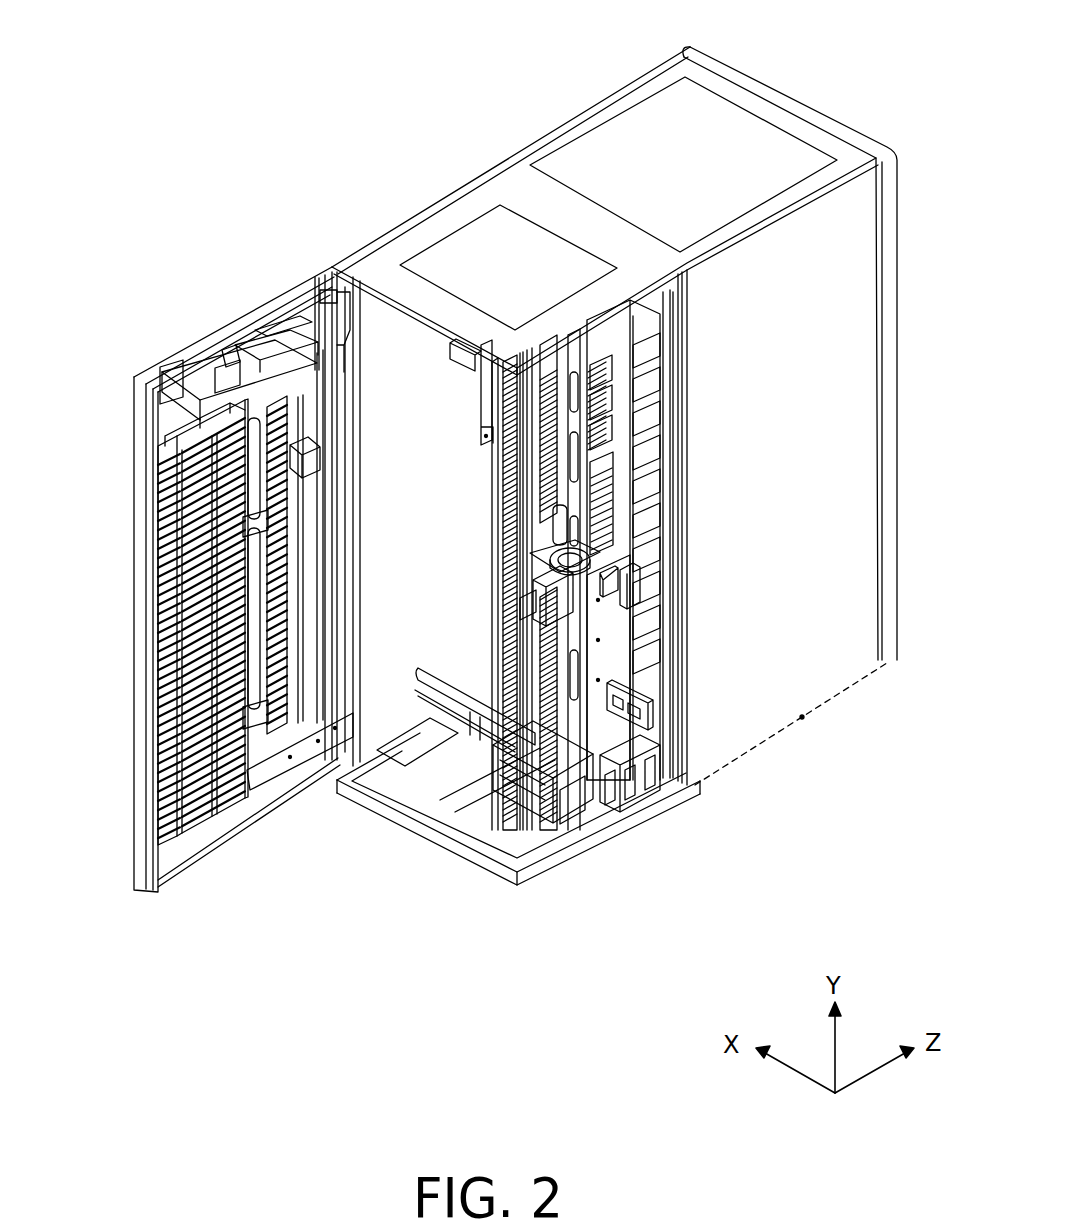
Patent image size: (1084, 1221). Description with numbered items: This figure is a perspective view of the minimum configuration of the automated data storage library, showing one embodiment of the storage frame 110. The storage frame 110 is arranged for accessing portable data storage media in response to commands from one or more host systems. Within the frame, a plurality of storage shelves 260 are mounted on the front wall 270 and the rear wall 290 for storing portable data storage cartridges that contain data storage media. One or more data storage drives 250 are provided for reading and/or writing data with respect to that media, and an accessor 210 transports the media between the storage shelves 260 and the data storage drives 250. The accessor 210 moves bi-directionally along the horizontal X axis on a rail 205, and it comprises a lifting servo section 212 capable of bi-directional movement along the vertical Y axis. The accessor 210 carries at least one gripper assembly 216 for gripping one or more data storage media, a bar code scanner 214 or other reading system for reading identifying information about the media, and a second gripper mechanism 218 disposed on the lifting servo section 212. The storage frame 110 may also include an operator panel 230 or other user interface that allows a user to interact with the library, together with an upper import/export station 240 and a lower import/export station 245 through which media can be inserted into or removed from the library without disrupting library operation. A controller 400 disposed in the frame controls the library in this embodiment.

The storage frame 110 is at (479, 916).
The rail 205 is at (472, 716).
The accessor 210 is at (557, 790).
The lifting servo section 212 is at (600, 562).
The bar code scanner 214 is at (535, 607).
The gripper assembly 216 is at (638, 577).
The second gripper mechanism 218 is at (630, 562).
The operator panel 230 is at (310, 381).
The upper import/export station 240 is at (290, 419).
The lower import/export station 245 is at (288, 608).
The data storage drive 250 is at (645, 362).
The storage shelves 260 is at (160, 698).
The front wall 270 is at (145, 549).
The rear wall 290 is at (492, 408).
The controller 400 is at (655, 716).